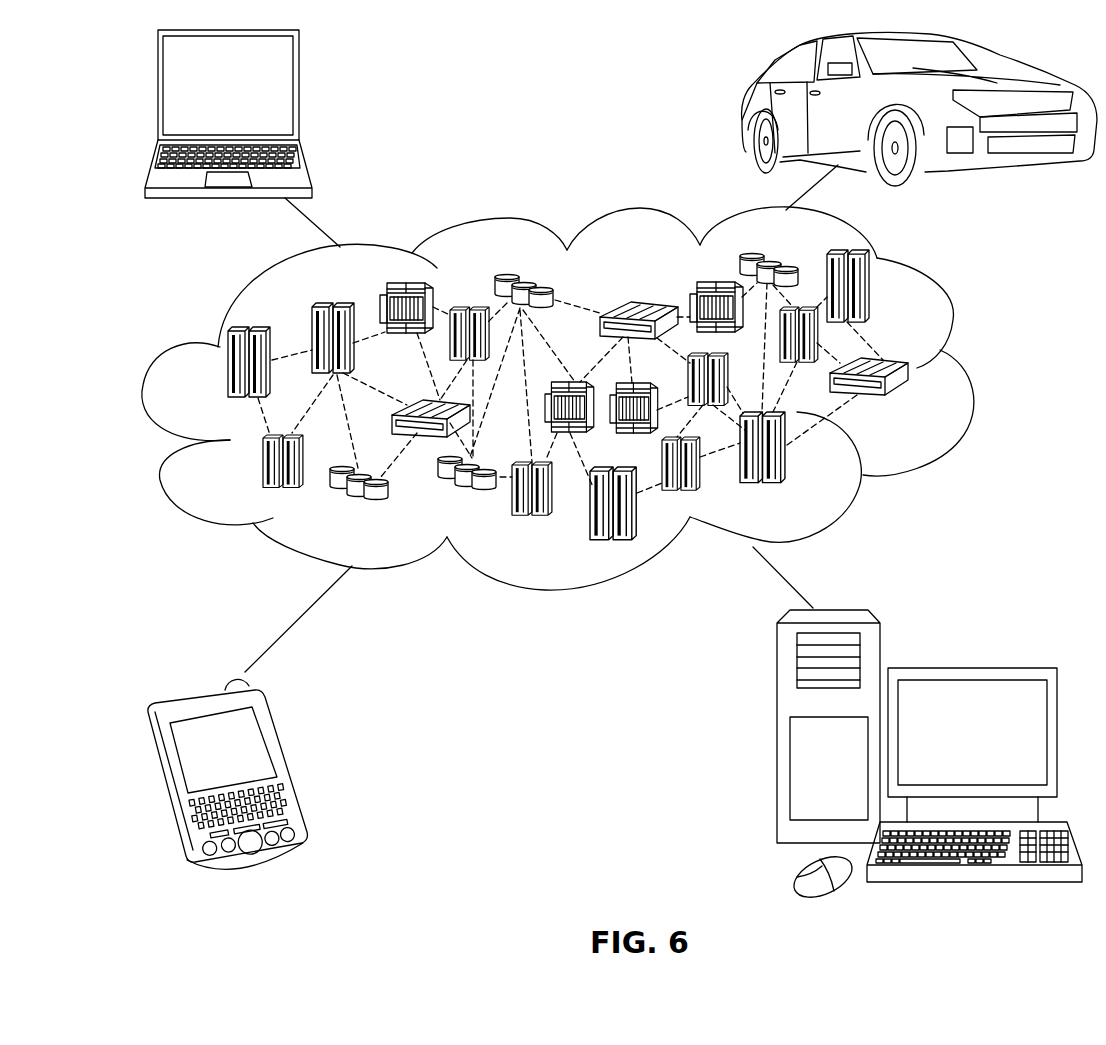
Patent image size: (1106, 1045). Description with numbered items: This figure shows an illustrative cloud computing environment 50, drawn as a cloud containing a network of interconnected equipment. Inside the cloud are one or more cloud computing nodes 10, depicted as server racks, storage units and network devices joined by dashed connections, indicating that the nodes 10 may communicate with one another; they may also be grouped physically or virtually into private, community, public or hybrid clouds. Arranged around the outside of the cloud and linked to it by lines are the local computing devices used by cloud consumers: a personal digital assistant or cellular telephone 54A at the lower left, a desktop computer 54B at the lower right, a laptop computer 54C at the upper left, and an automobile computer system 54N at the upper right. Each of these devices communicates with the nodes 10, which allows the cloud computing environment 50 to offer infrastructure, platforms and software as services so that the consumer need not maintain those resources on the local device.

The laptop computer 54C is at (300, 93).
The automobile computer system 54N is at (745, 110).
The personal digital assistant or cellular telephone 54A is at (290, 762).
The desktop computer 54B is at (970, 668).
The cloud computing environment 50 is at (972, 372).
The cloud computing node 10 is at (910, 405).